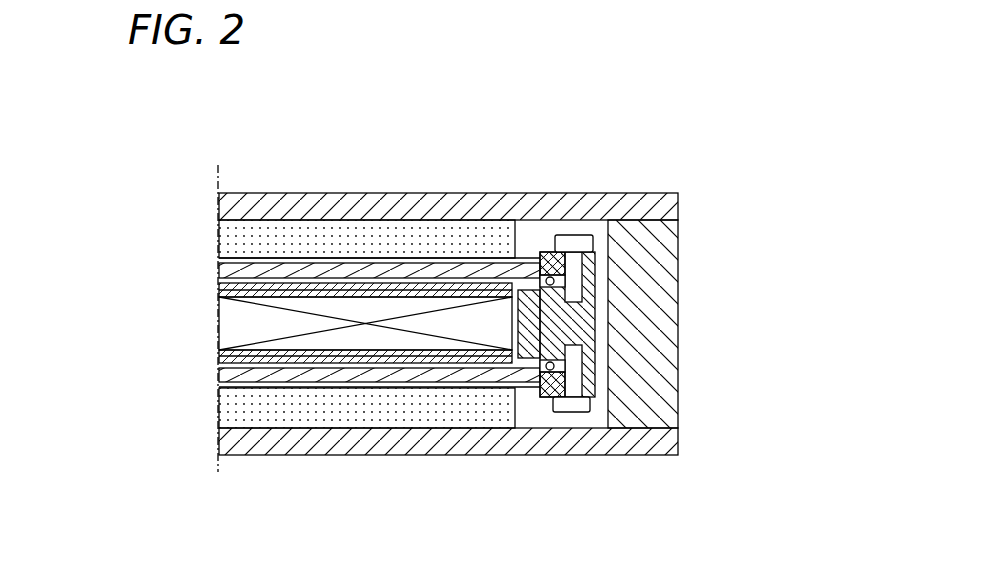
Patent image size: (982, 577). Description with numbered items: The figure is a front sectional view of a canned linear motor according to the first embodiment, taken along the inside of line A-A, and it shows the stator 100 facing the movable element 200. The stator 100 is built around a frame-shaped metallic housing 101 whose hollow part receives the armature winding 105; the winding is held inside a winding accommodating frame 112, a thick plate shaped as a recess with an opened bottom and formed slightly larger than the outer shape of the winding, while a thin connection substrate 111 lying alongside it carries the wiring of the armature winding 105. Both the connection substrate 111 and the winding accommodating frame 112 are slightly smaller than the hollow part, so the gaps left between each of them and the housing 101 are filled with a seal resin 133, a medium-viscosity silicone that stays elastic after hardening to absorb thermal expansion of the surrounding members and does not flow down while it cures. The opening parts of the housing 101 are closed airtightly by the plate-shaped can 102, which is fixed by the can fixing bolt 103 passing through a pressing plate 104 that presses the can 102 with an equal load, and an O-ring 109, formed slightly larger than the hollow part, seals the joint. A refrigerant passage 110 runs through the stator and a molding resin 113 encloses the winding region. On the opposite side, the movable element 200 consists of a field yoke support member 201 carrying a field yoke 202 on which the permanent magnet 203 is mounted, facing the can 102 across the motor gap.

The stator 100 is at (302, 310).
The housing 101 is at (584, 320).
The can 102 is at (228, 277).
The can fixing bolt 103 is at (582, 245).
The pressing plate 104 is at (550, 252).
The armature winding 105 is at (226, 333).
The O-ring 109 is at (542, 258).
The refrigerant passage 110 is at (226, 283).
The connection substrate 111 is at (226, 372).
The winding accommodating frame 112 is at (226, 298).
The molding resin 113 is at (380, 356).
The seal resin 133 is at (544, 342).
The movable element 200 is at (512, 273).
The field yoke support member 201 is at (658, 272).
The field yoke 202 is at (655, 208).
The permanent magnet 203 is at (230, 240).